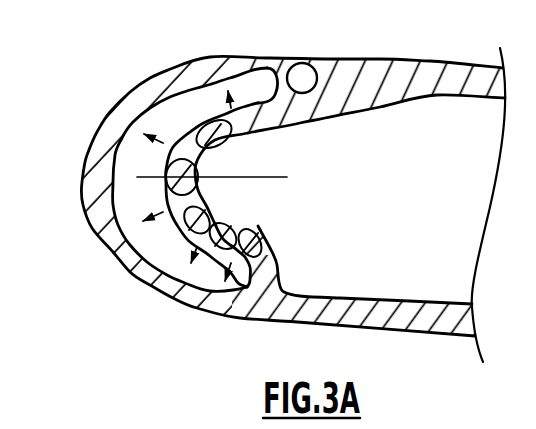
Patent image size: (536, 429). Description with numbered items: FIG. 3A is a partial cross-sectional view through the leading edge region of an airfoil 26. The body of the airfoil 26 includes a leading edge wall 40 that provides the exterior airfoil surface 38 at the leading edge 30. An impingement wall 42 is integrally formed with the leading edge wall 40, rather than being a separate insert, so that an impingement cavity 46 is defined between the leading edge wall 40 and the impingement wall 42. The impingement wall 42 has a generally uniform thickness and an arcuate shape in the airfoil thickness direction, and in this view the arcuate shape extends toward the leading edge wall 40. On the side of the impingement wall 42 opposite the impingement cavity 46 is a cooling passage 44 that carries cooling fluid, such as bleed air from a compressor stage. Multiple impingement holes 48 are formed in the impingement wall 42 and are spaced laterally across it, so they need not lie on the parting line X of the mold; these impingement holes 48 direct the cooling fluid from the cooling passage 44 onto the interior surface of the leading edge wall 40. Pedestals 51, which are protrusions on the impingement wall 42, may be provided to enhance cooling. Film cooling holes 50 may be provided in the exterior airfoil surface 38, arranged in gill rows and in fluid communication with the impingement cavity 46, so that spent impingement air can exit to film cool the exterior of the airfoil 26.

The airfoil 26 is at (127, 315).
The leading edge 30 is at (83, 185).
The exterior airfoil surface 38 is at (239, 320).
The leading edge wall 40 is at (91, 229).
The impingement wall 42 is at (272, 252).
The cooling passage 44 is at (445, 207).
The impingement cavity 46 is at (194, 124).
The impingement holes 48 is at (203, 167).
The film cooling holes 50 is at (349, 72).
The pedestals 51 is at (297, 73).
The parting line X is at (267, 178).